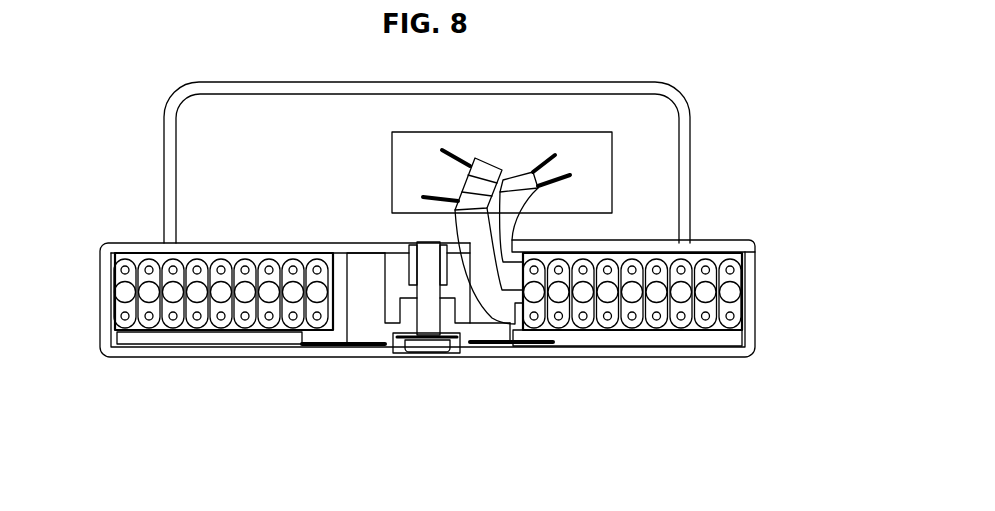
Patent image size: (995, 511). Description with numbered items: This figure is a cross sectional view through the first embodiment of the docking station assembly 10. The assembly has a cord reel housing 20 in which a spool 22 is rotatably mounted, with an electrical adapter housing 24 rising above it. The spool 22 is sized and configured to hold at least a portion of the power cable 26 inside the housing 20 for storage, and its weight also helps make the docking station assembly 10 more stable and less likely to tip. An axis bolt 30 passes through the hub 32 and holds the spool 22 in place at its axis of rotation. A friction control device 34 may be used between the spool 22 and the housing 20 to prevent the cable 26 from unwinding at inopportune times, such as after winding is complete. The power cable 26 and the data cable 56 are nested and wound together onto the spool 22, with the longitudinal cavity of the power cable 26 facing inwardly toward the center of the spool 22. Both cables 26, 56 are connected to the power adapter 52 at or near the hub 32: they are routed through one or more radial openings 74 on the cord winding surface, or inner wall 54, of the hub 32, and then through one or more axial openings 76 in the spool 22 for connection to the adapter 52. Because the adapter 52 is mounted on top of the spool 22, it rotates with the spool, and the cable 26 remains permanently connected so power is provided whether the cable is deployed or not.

The docking station assembly 10 is at (678, 431).
The cord reel housing 20 is at (455, 333).
The spool 22 is at (274, 216).
The electrical adapter housing 24 is at (482, 162).
The cable 26 is at (216, 333).
The axis bolt 30 is at (447, 325).
The hub 32 is at (406, 343).
The friction control device 34 is at (315, 377).
The power adapter 52 is at (407, 157).
The inner wall 54 is at (332, 259).
The data cable 56 is at (237, 355).
The radial openings 74 is at (533, 376).
The axial openings 76 is at (520, 236).